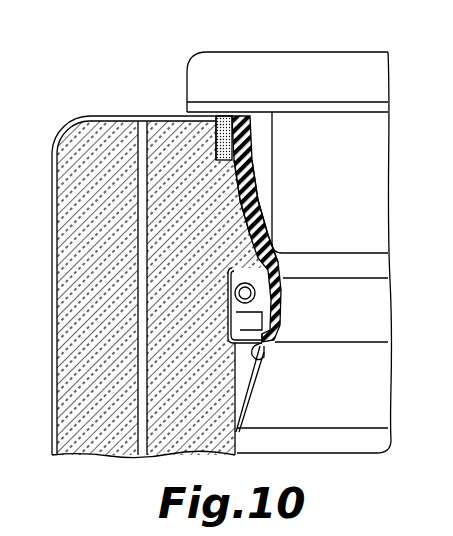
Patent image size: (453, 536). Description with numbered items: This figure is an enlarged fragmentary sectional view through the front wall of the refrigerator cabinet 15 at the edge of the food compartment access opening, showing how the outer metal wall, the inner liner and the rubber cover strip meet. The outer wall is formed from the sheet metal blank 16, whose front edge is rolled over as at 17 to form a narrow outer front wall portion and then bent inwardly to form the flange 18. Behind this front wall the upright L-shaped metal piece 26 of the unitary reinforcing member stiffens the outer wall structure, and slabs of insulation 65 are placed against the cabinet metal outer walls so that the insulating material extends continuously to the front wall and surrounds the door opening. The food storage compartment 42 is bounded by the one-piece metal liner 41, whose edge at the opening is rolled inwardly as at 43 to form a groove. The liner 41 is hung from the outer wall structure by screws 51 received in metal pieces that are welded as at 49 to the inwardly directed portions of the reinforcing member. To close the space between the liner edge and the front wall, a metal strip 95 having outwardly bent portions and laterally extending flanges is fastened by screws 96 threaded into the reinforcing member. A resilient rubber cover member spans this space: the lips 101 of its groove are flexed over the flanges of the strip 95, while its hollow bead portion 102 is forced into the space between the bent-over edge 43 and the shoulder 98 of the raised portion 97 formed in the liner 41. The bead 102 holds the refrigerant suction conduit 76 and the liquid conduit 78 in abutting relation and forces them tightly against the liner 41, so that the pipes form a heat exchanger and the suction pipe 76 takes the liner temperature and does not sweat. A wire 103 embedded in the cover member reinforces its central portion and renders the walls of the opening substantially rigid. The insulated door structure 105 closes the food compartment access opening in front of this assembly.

The refrigerator cabinet 15 is at (66, 130).
The sheet metal blank 16 is at (52, 328).
The front wall portion 17 is at (106, 116).
The flange 18 is at (218, 157).
The upright L-shaped metal piece 26 is at (220, 157).
The metal liner 41 is at (240, 440).
The food storage compartment 42 is at (314, 252).
The inwardly bent edge 43 is at (276, 296).
The weld 49 is at (252, 206).
The screw 51 is at (274, 273).
The insulation slab 65 is at (83, 236).
The suction conduit 76 is at (256, 290).
The conduit 78 is at (273, 318).
The metal strip 95 is at (250, 166).
The screw 96 is at (248, 150).
The raised portion 97 is at (262, 384).
The shoulder 98 is at (265, 358).
The lip 101 is at (231, 117).
The hollow bead portion 102 is at (277, 334).
The reinforcing wire 103 is at (268, 238).
The insulated door structure 105 is at (306, 66).